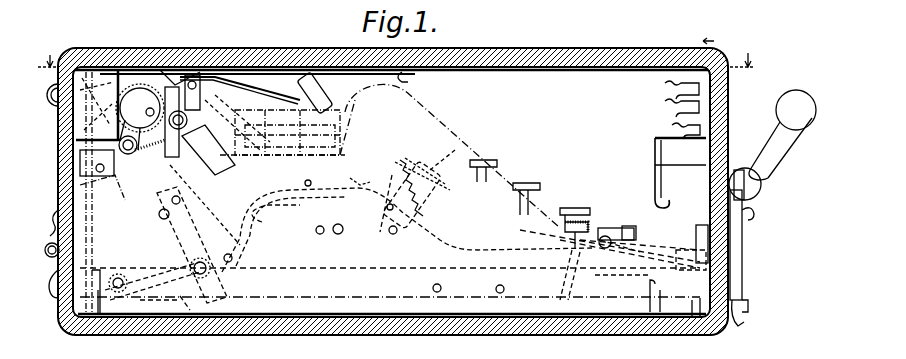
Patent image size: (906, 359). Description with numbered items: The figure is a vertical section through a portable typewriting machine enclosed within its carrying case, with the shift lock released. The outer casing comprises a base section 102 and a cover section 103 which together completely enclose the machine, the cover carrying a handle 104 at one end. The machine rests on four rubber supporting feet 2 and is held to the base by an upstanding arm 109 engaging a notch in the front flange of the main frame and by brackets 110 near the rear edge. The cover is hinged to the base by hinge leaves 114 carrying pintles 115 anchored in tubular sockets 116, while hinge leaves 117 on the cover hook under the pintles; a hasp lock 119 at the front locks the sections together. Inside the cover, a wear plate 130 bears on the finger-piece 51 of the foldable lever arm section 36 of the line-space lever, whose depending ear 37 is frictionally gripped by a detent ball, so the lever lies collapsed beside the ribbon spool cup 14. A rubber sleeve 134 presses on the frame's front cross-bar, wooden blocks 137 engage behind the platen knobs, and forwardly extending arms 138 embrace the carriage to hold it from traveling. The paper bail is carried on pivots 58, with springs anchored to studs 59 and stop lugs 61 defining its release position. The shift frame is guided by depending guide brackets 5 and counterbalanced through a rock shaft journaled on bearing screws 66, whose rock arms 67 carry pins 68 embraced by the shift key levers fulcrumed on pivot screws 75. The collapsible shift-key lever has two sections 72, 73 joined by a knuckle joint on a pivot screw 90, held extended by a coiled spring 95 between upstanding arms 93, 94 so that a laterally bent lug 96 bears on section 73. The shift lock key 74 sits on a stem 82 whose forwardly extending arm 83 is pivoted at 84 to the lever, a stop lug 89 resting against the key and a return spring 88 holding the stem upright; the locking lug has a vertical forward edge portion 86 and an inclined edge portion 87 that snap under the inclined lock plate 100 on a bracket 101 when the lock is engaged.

The rubber supporting feet 2 is at (445, 185).
The guide brackets 5 is at (405, 56).
The ribbon spool cups 14 is at (450, 156).
The foldable lever arm section 36 is at (282, 128).
The depending ear 37 is at (102, 173).
The finger-piece 51 is at (308, 72).
The pivots 58 is at (55, 98).
The studs 59 is at (140, 119).
The stop lugs 61 is at (118, 70).
The bearing screws 66 is at (124, 283).
The rock arms 67 is at (180, 318).
The pins 68 is at (180, 245).
The shift-key lever section 72 is at (663, 206).
The shift-key lever section 73 is at (262, 220).
The shift lock key 74 is at (585, 208).
The pivot screws 75 is at (310, 188).
The stem 82 is at (594, 228).
The forwardly extending arm 83 is at (578, 238).
The pivot 84 is at (628, 228).
The vertical forward edge portion 86 is at (636, 238).
The inclined edge portion 87 is at (600, 258).
The return spring 88 is at (559, 275).
The stop lug 89 is at (608, 236).
The pivot screw 90 is at (392, 234).
The upstanding arm 93 is at (440, 205).
The upstanding arm 94 is at (388, 176).
The coiled spring 95 is at (458, 150).
The laterally bent lug 96 is at (350, 174).
The inclined lock plate 100 is at (627, 290).
The bracket 101 is at (613, 322).
The base section 102 is at (350, 322).
The cover section 103 is at (633, 78).
The handle 104 is at (772, 120).
The upstanding arm 109 is at (685, 320).
The brackets 110 is at (132, 322).
The hinge leaves 114 is at (58, 322).
The hinge pintles 115 is at (47, 244).
The tubular sockets 116 is at (47, 283).
The hinge leaves 117 is at (47, 216).
The hasp lock 119 is at (745, 322).
The wear plate 130 is at (422, 83).
The rubber sleeve 134 is at (690, 250).
The wooden blocks 137 is at (86, 78).
The forwardly extending arms 138 is at (60, 183).